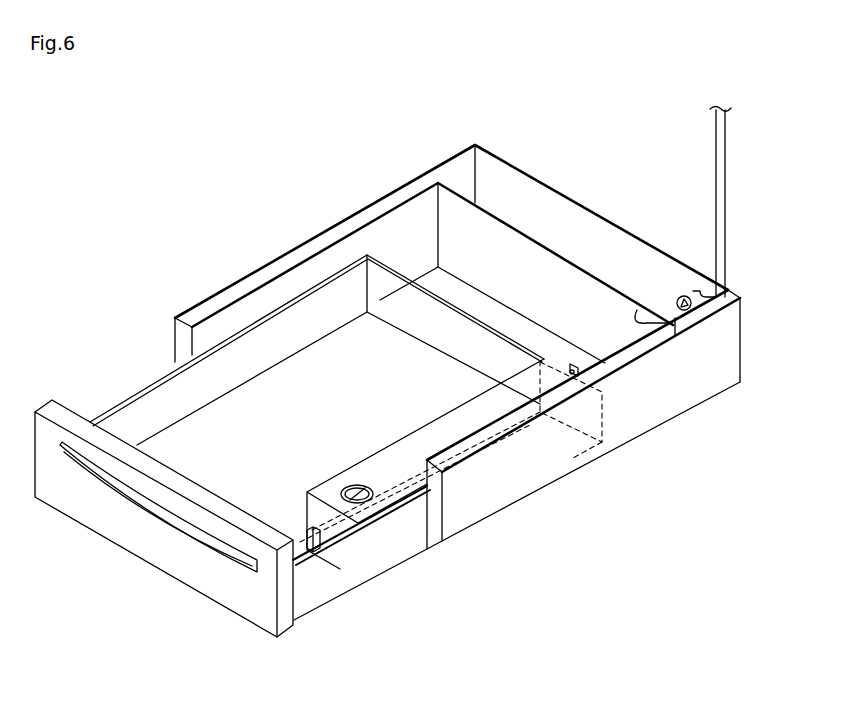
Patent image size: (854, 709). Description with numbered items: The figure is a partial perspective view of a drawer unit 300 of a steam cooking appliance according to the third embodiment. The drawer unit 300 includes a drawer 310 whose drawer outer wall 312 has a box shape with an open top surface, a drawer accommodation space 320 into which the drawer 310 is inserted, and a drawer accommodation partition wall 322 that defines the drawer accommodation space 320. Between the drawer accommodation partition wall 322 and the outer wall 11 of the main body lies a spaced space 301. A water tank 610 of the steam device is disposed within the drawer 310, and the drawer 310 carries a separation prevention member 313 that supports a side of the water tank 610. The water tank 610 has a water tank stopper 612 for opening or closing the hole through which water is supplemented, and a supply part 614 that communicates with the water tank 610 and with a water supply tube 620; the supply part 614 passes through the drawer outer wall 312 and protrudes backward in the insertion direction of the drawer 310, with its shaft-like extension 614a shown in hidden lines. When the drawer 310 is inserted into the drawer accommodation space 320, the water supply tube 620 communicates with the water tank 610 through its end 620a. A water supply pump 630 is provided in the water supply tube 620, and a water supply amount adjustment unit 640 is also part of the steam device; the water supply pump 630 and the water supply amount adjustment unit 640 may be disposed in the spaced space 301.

The outer wall 11 is at (573, 223).
The drawer unit 300 is at (176, 601).
The spaced space 301 is at (607, 250).
The drawer 310 is at (75, 405).
The drawer outer wall 312 is at (312, 590).
The separation prevention member 313 is at (333, 550).
The drawer accommodation space 320 is at (476, 303).
The drawer accommodation partition wall 322 is at (520, 231).
The water tank 610 is at (375, 468).
The water tank stopper 612 is at (373, 494).
The supply part 614 is at (585, 372).
The shaft 614a is at (600, 372).
The water supply tube 620 is at (726, 137).
The rod end 620a is at (660, 300).
The water supply pump 630 is at (695, 303).
The water supply amount adjustment unit 640 is at (673, 330).